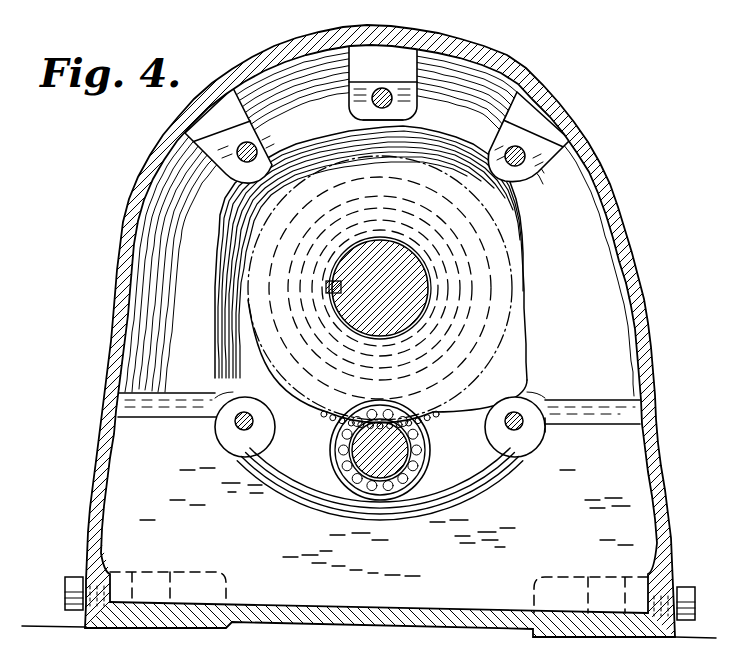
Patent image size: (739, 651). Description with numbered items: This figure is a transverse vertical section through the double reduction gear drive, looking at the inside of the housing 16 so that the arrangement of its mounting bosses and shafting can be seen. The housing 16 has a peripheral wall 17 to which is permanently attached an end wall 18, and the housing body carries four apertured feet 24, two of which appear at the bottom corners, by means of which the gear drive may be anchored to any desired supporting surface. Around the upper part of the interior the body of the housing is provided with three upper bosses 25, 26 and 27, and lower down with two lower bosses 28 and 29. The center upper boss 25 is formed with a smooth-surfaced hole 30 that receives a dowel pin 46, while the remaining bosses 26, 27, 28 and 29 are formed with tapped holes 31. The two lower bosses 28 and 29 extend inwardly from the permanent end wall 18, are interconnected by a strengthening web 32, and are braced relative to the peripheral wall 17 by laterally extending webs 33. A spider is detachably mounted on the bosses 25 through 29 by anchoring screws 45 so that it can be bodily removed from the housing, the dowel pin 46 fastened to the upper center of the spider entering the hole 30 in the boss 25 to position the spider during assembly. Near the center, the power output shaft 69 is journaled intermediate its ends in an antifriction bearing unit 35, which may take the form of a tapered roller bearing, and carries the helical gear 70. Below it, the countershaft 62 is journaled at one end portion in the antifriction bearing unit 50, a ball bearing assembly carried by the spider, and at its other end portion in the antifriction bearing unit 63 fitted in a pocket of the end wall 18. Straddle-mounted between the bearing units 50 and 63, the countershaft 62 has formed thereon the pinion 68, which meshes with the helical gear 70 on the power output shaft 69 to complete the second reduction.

The housing 16 is at (562, 99).
The peripheral wall 17 is at (462, 42).
The end wall 18 is at (627, 493).
The apertured feet 24 is at (199, 572).
The center upper boss 25 is at (417, 98).
The upper boss 26 is at (250, 127).
The upper boss 27 is at (502, 125).
The lower boss 28 is at (227, 449).
The lower boss 29 is at (522, 448).
The hole 30 is at (393, 106).
The tapped holes 31 is at (225, 178).
The strengthening web 32 is at (367, 522).
The webs 33 is at (160, 420).
The antifriction bearing unit 35 is at (467, 295).
The anchoring screws 45 is at (255, 148).
The dowel pin 46 is at (372, 98).
The antifriction bearing unit 50 is at (343, 448).
The countershaft 62 is at (362, 451).
The antifriction bearing unit 63 is at (402, 499).
The pinion 68 is at (416, 467).
The power output shaft 69 is at (379, 256).
The helical gear 70 is at (430, 449).